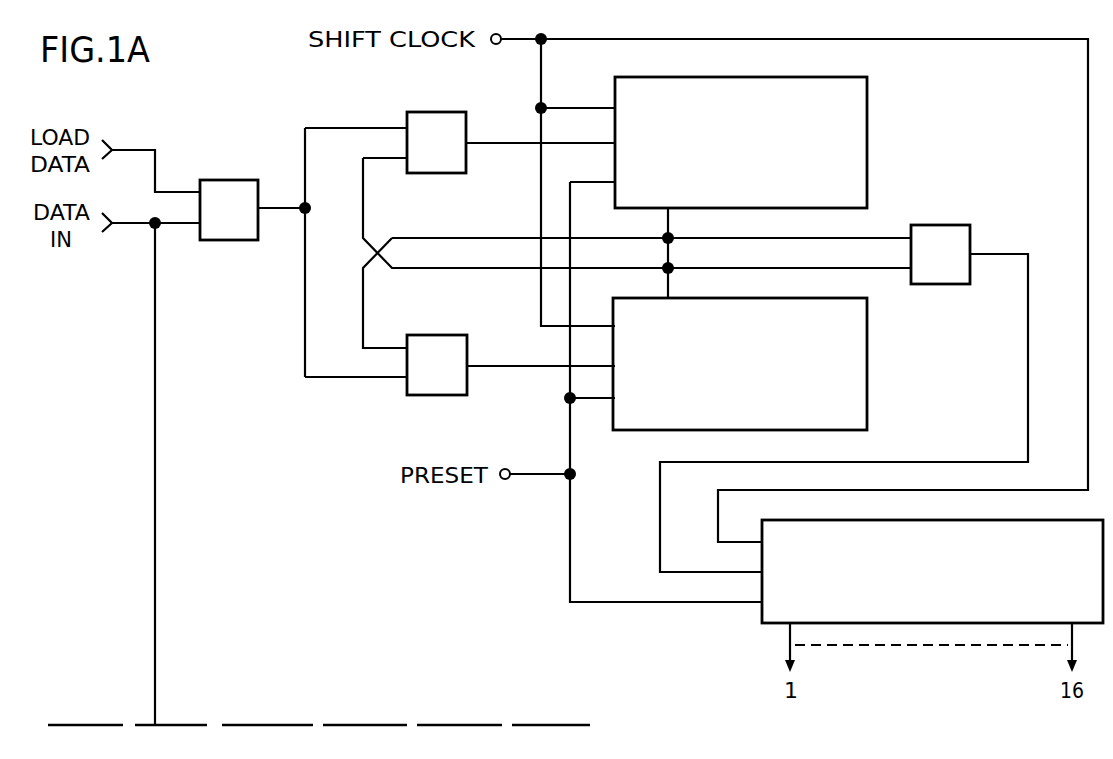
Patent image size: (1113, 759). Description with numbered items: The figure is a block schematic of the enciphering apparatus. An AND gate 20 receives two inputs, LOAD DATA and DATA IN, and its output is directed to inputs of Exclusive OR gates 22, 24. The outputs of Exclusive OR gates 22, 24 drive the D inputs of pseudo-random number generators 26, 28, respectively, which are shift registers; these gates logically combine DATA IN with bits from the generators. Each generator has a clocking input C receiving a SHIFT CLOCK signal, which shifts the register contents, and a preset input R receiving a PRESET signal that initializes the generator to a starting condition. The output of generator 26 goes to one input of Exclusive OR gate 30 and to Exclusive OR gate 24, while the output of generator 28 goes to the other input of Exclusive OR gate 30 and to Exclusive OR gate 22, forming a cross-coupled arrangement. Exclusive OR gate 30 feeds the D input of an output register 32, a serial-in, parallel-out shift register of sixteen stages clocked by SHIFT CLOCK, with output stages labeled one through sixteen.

The AND gate 20 is at (207, 181).
The Exclusive OR gate 22 is at (457, 167).
The Exclusive OR gate 24 is at (415, 387).
The pseudo-random number generator 26 is at (862, 121).
The pseudo-random number generator 28 is at (858, 399).
The Exclusive OR gate 30 is at (925, 226).
The output register 32 is at (763, 621).